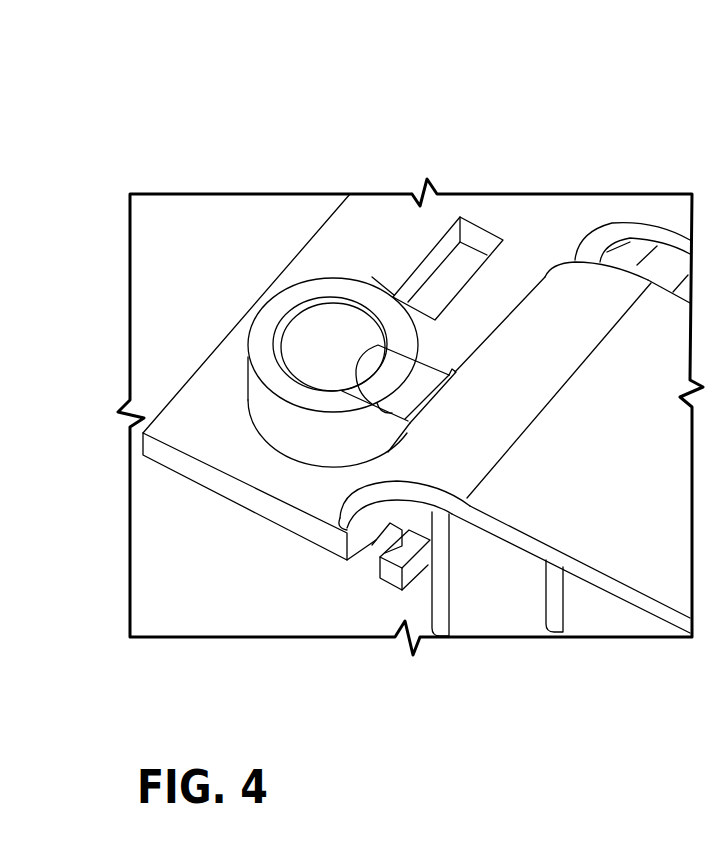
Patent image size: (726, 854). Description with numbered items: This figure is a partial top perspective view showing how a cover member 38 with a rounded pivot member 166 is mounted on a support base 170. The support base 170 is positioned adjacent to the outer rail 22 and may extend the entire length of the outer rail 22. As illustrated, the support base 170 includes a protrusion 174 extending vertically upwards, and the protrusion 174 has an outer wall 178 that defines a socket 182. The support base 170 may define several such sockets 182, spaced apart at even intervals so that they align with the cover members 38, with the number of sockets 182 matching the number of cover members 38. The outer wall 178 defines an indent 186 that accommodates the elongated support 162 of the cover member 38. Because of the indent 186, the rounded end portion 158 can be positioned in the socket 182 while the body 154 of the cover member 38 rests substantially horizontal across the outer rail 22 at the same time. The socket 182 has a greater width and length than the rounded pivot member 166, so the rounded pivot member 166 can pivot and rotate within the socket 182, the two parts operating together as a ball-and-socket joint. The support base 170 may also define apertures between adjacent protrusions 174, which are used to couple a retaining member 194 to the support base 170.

The outer rail 22 is at (482, 565).
The cover member 38 is at (626, 516).
The body 154 is at (592, 508).
The rounded end portion 158 is at (362, 512).
The elongated support 162 is at (403, 381).
The rounded pivot member 166 is at (337, 320).
The support base 170 is at (531, 240).
The protrusion 174 is at (288, 448).
The outer wall 178 is at (285, 388).
The socket 182 is at (272, 328).
The indent 186 is at (378, 422).
The retaining member 194 is at (443, 228).